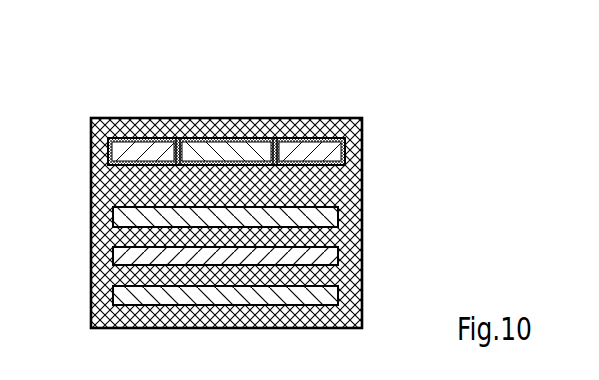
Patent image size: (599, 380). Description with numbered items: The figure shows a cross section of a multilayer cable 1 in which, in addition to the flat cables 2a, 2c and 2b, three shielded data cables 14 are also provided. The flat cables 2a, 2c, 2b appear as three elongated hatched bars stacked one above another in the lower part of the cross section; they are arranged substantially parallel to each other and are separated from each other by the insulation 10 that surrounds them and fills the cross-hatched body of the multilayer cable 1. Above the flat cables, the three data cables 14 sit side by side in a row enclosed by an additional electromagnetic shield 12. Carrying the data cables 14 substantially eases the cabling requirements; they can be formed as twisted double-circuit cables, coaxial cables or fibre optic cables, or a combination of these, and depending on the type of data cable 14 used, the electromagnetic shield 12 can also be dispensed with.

The multilayer cable 1 is at (343, 103).
The insulation 10 is at (105, 178).
The electromagnetic shield 12 is at (141, 139).
The shielded data cables 14 is at (340, 150).
The flat cable 2a is at (330, 217).
The flat cable 2c is at (325, 256).
The flat cable 2b is at (330, 297).